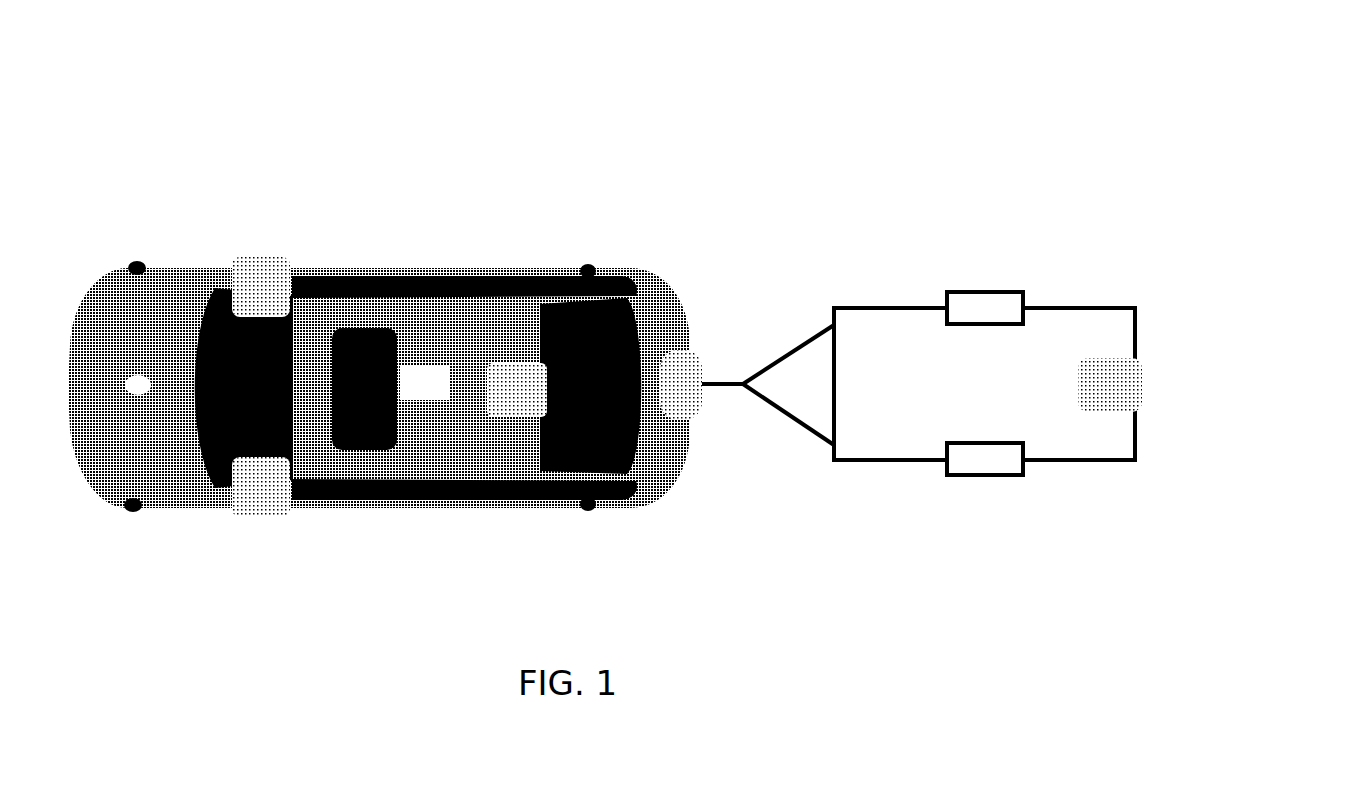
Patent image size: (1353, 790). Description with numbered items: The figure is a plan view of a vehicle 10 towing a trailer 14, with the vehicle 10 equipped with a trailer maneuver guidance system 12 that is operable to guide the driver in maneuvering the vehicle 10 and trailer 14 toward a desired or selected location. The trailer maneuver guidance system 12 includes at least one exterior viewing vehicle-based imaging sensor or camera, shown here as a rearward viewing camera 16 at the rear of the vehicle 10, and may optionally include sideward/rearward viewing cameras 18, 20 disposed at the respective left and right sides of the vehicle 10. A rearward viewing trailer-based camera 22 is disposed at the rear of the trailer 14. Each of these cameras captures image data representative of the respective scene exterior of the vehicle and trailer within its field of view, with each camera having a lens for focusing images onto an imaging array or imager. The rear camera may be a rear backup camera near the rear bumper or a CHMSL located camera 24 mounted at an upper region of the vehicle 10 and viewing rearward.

The vehicle 10 is at (699, 352).
The trailer maneuver guidance system 12 is at (390, 162).
The trailer 14 is at (1016, 323).
The rearward viewing camera 16 is at (672, 385).
The sideward/rearward viewing camera 18 is at (265, 495).
The sideward/rearward viewing camera 20 is at (250, 290).
The rearward viewing trailer-based camera 22 is at (1102, 377).
The CHMSL camera 24 is at (505, 392).